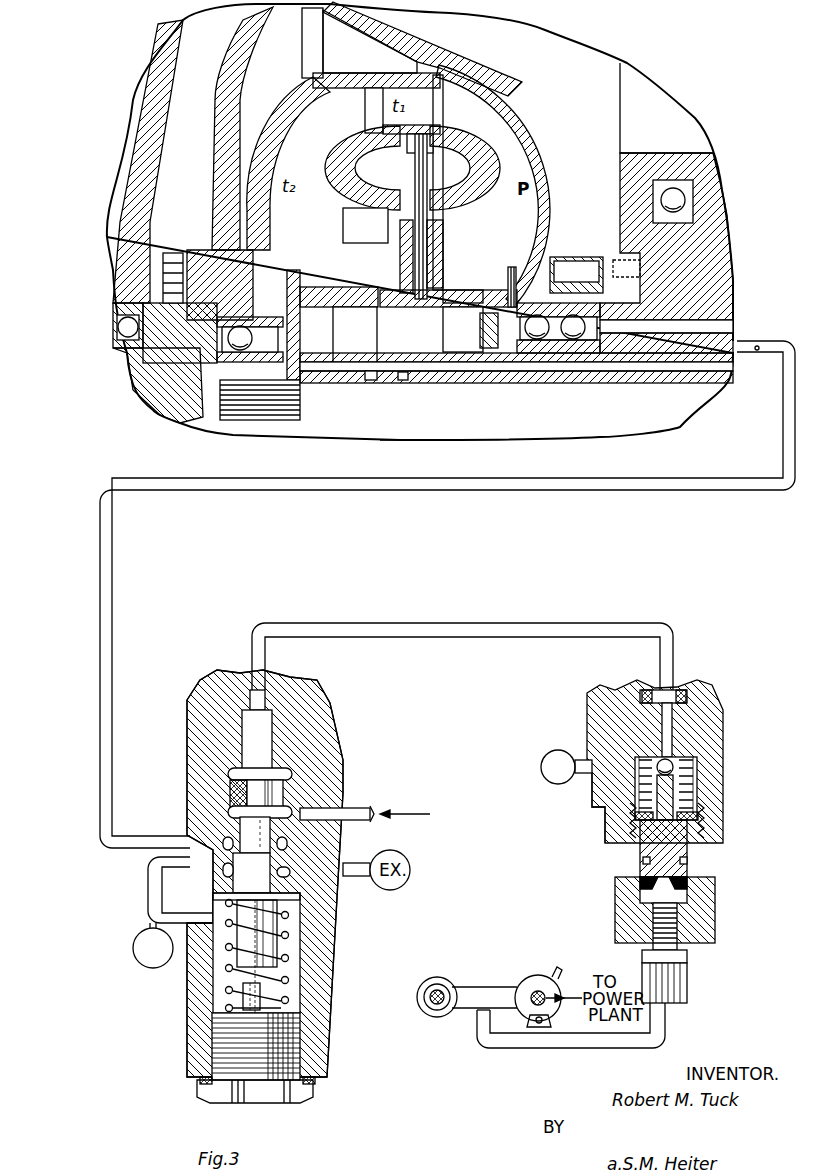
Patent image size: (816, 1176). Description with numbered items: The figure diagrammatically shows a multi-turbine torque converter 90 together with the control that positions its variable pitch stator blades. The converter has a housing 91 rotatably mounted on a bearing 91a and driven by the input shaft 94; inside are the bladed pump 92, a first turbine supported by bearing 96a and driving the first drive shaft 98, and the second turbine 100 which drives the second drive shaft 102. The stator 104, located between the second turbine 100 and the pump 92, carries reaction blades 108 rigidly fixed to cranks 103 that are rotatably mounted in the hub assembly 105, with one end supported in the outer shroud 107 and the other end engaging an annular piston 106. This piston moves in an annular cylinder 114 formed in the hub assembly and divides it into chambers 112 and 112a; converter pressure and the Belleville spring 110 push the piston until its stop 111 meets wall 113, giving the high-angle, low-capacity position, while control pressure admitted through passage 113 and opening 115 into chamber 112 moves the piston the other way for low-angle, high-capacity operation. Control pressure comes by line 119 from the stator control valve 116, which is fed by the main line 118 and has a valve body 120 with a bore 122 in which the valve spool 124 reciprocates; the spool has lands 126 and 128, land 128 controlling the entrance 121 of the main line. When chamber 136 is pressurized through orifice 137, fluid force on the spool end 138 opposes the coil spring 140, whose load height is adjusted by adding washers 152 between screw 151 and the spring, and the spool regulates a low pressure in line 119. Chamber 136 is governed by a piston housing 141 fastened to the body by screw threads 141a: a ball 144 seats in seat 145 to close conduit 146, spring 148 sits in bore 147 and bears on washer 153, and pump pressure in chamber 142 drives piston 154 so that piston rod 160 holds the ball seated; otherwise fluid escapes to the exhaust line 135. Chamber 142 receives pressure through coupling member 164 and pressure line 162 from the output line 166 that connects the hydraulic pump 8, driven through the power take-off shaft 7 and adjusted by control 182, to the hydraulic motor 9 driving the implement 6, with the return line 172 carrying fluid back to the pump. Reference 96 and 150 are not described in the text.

The multi-turbine torque converter 90 is at (490, 78).
The housing 91 is at (402, 33).
The bearing 91a is at (560, 345).
The bladed pump 92 is at (523, 148).
The input shaft 94 is at (140, 392).
The partition 96 is at (438, 98).
The bearing 96a is at (215, 362).
The first drive shaft 98 is at (405, 438).
The second turbine 100 is at (315, 112).
The second drive shaft 102 is at (470, 390).
The cranks 103 is at (418, 243).
The stator 104 is at (485, 252).
The hub assembly 105 is at (470, 300).
The annular piston 106 is at (535, 296).
The outer shroud 107 is at (430, 212).
The reaction blades 108 is at (472, 236).
The Belleville spring 110 is at (555, 297).
The stop 111 is at (375, 376).
The chamber 112 is at (395, 320).
The chamber 112a is at (520, 300).
The passage 113 is at (575, 372).
The annular cylinder 114 is at (450, 296).
The opening 115 is at (405, 382).
The stator control valve 116 is at (345, 781).
The main line 118 is at (372, 813).
The line 119 is at (665, 485).
The valve body 120 is at (325, 925).
The entrance 121 is at (312, 833).
The bore 122 is at (285, 838).
The valve spool 124 is at (235, 960).
The land 126 is at (185, 856).
The land 128 is at (278, 800).
The exhaust line 135 is at (570, 776).
The chamber 136 is at (262, 748).
The orifice 137 is at (228, 790).
The end 138 is at (268, 778).
The coil spring 140 is at (287, 956).
The piston housing 141 is at (718, 895).
The screw threads 141a is at (690, 835).
The chamber 142 is at (680, 930).
The ball 144 is at (682, 766).
The seat 145 is at (672, 752).
The conduit 146 is at (465, 640).
The bore 147 is at (705, 800).
The spring 148 is at (700, 786).
The spring seat 150 is at (302, 894).
The screw 151 is at (302, 1098).
The washers 152 is at (302, 1036).
The washer 153 is at (700, 815).
The piston 154 is at (688, 850).
The piston rod 160 is at (625, 820).
The pressure line 162 is at (667, 1031).
The coupling member 164 is at (690, 990).
The output line 166 is at (465, 1015).
The return line 172 is at (485, 985).
The control 182 is at (556, 968).
The implement or accessory 6 is at (437, 1012).
The power take-off shaft 7 is at (522, 1022).
The hydraulic pump 8 is at (560, 985).
The hydraulic motor 9 is at (445, 985).